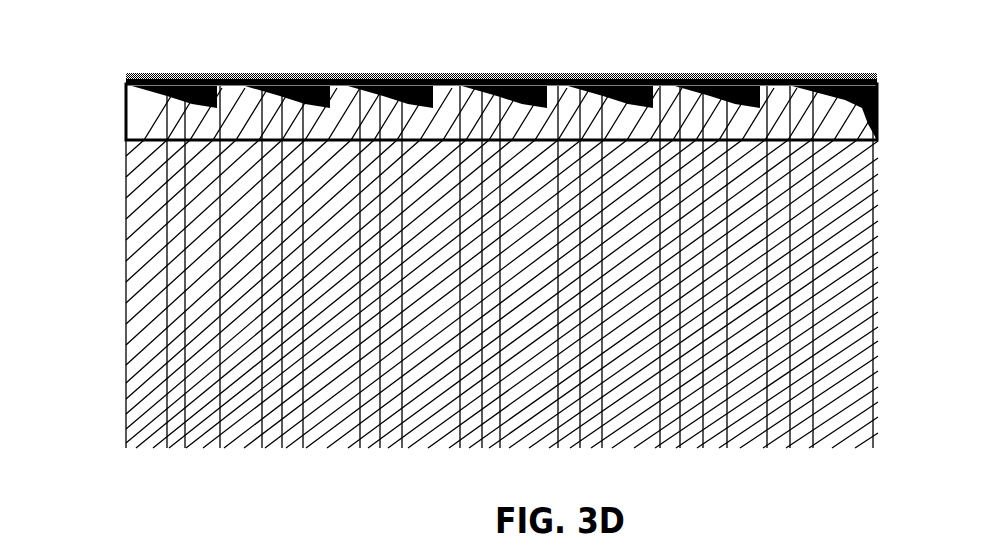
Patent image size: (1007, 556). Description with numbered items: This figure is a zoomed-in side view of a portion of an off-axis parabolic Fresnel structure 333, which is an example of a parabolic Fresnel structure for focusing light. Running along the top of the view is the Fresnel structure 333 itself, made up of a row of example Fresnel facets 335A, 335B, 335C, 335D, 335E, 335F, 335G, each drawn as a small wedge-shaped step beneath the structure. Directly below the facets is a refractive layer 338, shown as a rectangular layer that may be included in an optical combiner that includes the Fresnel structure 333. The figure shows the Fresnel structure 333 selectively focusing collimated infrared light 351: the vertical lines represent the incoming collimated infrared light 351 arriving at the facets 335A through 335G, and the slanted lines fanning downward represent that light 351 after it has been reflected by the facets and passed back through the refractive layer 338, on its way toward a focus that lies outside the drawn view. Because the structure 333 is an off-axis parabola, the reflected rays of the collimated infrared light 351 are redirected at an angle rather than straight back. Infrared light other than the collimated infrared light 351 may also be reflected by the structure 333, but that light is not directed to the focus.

The off-axis parabolic Fresnel structure 333 is at (125, 84).
The refractive layer 338 is at (109, 119).
The Fresnel facet 335A is at (185, 62).
The Fresnel facet 335B is at (297, 62).
The Fresnel facet 335C is at (393, 62).
The Fresnel facet 335D is at (512, 62).
The Fresnel facet 335E is at (622, 62).
The Fresnel facet 335F is at (733, 62).
The Fresnel facet 335G is at (842, 62).
The collimated infrared light 351 is at (893, 108).